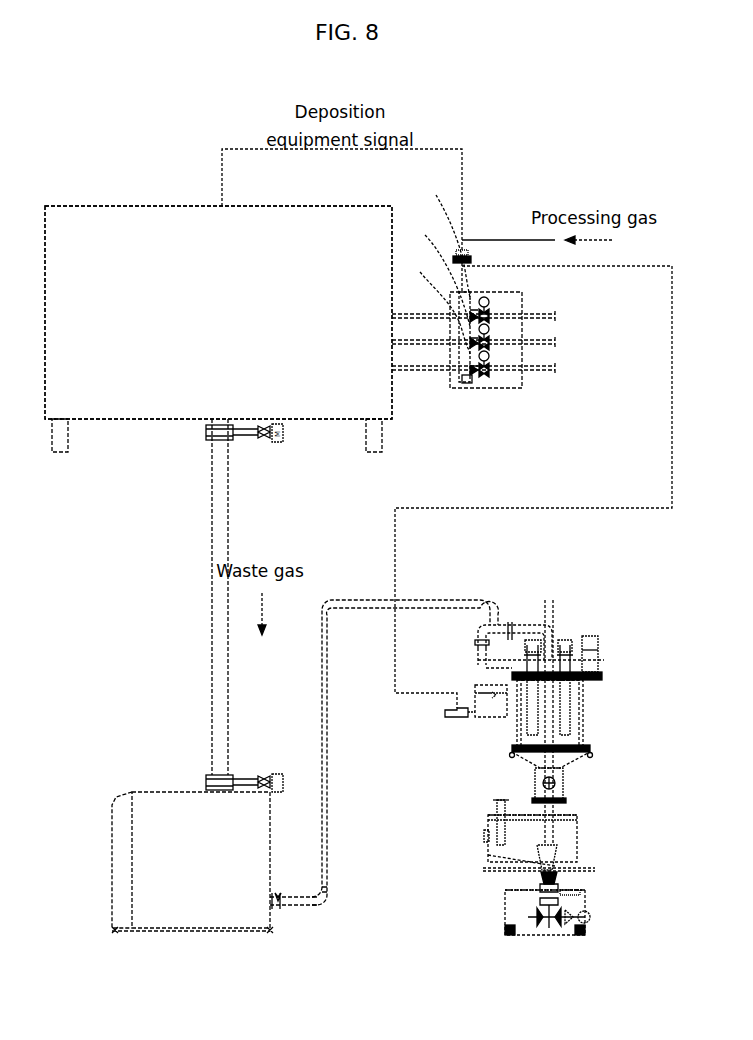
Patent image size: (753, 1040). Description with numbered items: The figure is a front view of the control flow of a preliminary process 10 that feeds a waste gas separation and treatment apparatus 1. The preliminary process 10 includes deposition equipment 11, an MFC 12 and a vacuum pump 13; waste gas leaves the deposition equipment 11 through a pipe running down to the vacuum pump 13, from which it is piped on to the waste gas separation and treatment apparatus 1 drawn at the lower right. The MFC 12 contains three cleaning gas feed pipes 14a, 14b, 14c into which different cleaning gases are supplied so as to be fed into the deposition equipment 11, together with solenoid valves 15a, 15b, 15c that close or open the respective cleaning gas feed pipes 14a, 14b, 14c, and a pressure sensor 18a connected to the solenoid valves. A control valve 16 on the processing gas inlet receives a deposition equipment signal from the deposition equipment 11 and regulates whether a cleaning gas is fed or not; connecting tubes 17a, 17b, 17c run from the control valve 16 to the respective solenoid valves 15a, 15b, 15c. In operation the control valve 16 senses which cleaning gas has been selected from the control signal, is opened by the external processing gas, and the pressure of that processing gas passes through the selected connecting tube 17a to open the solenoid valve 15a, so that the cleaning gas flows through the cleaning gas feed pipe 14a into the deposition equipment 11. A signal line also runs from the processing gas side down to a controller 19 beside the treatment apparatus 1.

The waste gas separation and treatment apparatus 1 is at (478, 905).
The preliminary process 10 is at (115, 185).
The deposition equipment 11 is at (167, 419).
The MFC 12 is at (486, 388).
The vacuum pump 13 is at (160, 792).
The cleaning gas feed pipe 14a is at (562, 314).
The cleaning gas feed pipe 14b is at (558, 341).
The cleaning gas feed pipe 14c is at (558, 367).
The solenoid valve 15a is at (490, 305).
The solenoid valve 15b is at (490, 338).
The solenoid valve 15c is at (492, 367).
The control valve 16 is at (463, 250).
The connecting tube 17a is at (470, 320).
The connecting tube 17b is at (472, 347).
The connecting tube 17c is at (470, 373).
The pressure sensor 18a is at (433, 265).
The controller 19 is at (455, 720).